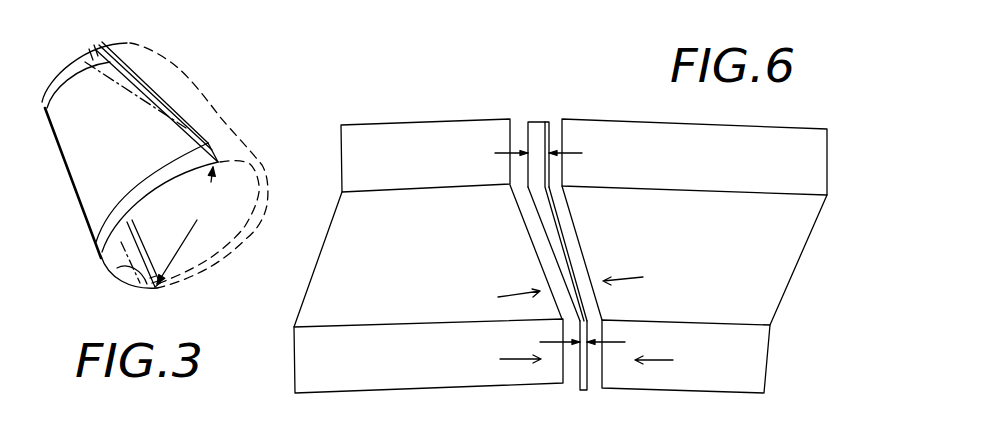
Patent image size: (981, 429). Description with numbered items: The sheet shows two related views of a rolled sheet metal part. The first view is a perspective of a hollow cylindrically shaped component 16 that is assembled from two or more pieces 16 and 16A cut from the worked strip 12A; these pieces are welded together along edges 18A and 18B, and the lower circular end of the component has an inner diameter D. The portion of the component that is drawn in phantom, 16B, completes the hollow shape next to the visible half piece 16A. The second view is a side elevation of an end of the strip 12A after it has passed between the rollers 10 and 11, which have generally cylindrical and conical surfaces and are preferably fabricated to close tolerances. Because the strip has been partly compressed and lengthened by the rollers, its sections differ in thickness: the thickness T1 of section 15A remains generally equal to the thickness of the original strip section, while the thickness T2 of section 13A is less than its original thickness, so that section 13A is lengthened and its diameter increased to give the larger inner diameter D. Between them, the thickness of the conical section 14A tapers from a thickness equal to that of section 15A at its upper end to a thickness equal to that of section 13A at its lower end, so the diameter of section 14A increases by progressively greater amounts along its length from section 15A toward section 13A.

In FIG. 6, the roller 10 is at (841, 163).
In FIG. 6, the roller 11 is at (333, 398).
In FIG. 6, the strip 12A is at (535, 120).
In FIG. 6, the section 13A is at (578, 368).
In FIG. 6, the section 14A is at (541, 222).
In FIG. 6, the section 15A is at (546, 121).
In FIG. 6, the thickness T1 is at (582, 153).
In FIG. 6, the thickness T2 is at (613, 342).
In FIG. 3, the hollow cylindrically shaped component 16 is at (265, 151).
In FIG. 3, the piece 16A is at (73, 196).
In FIG. 3, the phantom other half of tubular member 16B is at (199, 97).
In FIG. 3, the edge 18A is at (188, 133).
In FIG. 3, the edge 18B is at (118, 290).
In FIG. 3, the inner diameter D is at (197, 220).